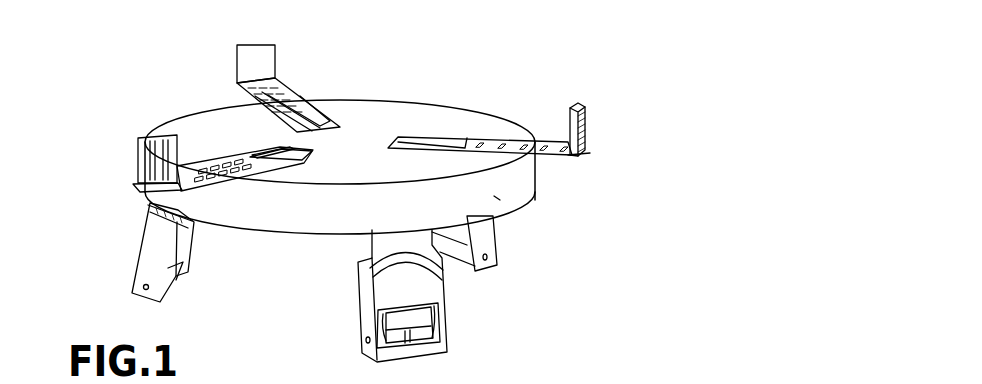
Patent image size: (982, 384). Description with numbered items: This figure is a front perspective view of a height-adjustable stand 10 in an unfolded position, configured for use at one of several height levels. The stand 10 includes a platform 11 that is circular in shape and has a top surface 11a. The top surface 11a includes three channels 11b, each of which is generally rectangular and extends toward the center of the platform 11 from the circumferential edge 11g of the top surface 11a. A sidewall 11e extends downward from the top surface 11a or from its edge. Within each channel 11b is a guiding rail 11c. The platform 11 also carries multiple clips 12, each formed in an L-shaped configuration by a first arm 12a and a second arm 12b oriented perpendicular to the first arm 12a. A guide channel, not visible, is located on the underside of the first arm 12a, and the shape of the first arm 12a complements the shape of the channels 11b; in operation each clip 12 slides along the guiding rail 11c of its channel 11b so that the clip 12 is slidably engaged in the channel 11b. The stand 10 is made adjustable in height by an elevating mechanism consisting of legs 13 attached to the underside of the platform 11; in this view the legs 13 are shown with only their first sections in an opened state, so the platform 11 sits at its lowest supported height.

The height-adjustable stand 10 is at (559, 66).
The platform 11 is at (408, 102).
The top surface 11a is at (437, 122).
The channels 11b is at (322, 123).
The guiding rail 11c is at (297, 113).
The sidewall 11e is at (497, 198).
The edge 11g is at (502, 127).
The clips 12 is at (238, 83).
The first arm 12a is at (192, 180).
The second arm 12b is at (143, 137).
The legs 13 is at (126, 246).